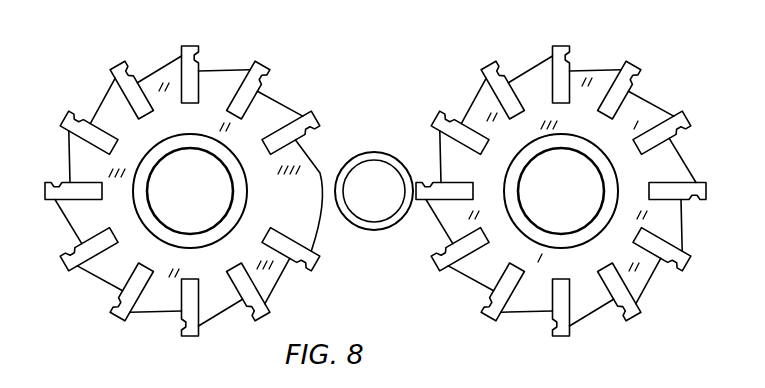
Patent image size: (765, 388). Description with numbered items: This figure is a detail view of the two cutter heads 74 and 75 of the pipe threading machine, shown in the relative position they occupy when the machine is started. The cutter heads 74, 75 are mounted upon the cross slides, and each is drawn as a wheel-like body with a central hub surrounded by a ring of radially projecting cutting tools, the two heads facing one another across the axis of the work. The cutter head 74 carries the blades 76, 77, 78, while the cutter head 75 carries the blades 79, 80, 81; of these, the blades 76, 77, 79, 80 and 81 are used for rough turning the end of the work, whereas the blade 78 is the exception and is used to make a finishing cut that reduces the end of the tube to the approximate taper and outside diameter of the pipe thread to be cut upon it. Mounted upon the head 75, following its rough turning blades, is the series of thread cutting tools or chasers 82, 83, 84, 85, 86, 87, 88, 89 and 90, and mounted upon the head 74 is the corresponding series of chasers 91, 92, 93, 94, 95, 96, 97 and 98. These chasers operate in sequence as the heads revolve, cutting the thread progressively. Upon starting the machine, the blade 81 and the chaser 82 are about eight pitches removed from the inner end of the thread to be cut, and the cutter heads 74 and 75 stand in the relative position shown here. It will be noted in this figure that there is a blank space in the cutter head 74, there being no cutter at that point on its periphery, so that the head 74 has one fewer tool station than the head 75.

The cutter head 74 is at (222, 71).
The cutter head 75 is at (602, 70).
The blade 76 is at (313, 113).
The blade 77 is at (264, 66).
The blade 78 is at (198, 46).
The blade 79 is at (426, 202).
The blade 80 is at (439, 270).
The blade 81 is at (490, 318).
The thread cutting tool or chaser 82 is at (568, 336).
The thread cutting tool or chaser 83 is at (630, 320).
The thread cutting tool or chaser 84 is at (684, 269).
The thread cutting tool or chaser 85 is at (706, 191).
The thread cutting tool or chaser 86 is at (688, 127).
The thread cutting tool or chaser 87 is at (638, 73).
The thread cutting tool or chaser 88 is at (557, 46).
The thread cutting tool or chaser 89 is at (498, 71).
The thread cutting tool or chaser 90 is at (448, 116).
The thread cutting tool or chaser 91 is at (119, 66).
The thread cutting tool or chaser 92 is at (63, 120).
The thread cutting tool or chaser 93 is at (45, 191).
The thread cutting tool or chaser 94 is at (62, 263).
The thread cutting tool or chaser 95 is at (120, 318).
The thread cutting tool or chaser 96 is at (191, 337).
The thread cutting tool or chaser 97 is at (260, 318).
The thread cutting tool or chaser 98 is at (312, 271).